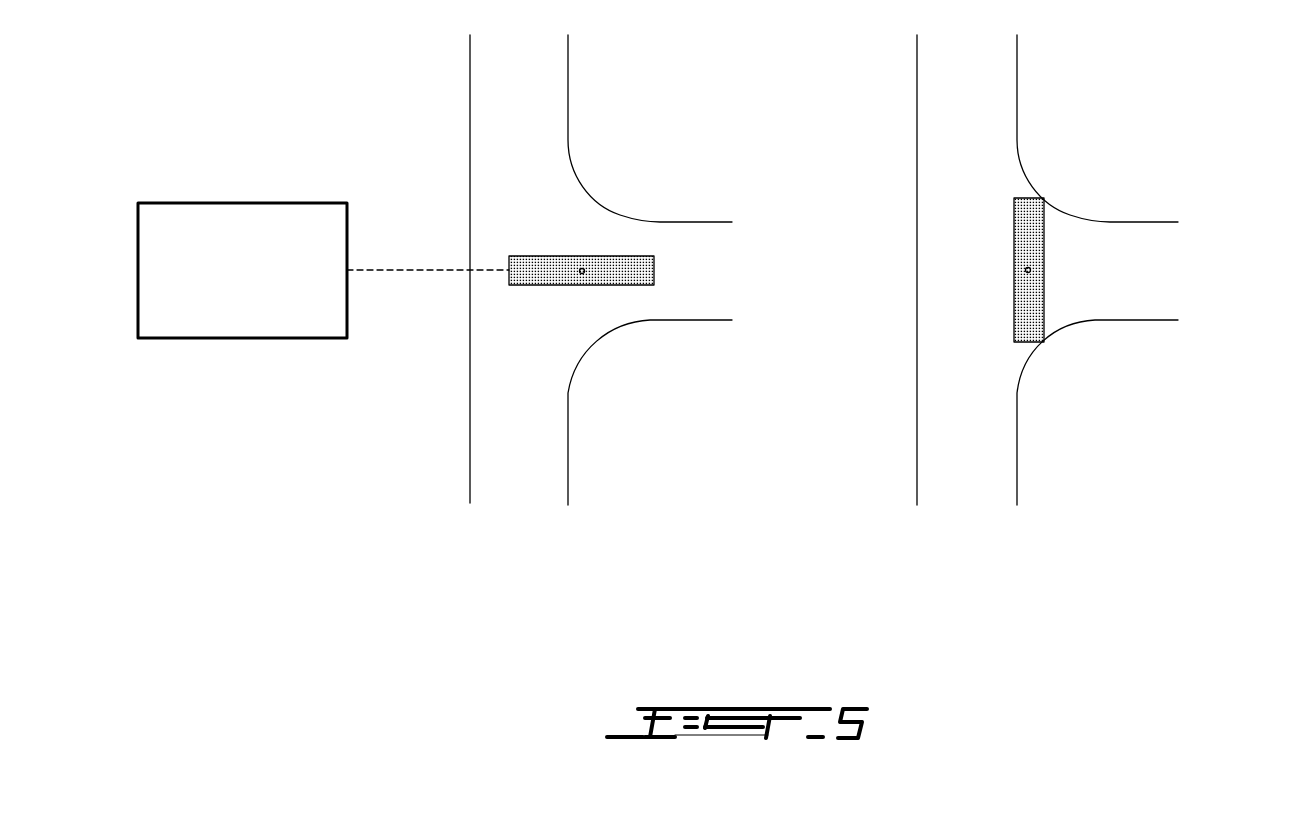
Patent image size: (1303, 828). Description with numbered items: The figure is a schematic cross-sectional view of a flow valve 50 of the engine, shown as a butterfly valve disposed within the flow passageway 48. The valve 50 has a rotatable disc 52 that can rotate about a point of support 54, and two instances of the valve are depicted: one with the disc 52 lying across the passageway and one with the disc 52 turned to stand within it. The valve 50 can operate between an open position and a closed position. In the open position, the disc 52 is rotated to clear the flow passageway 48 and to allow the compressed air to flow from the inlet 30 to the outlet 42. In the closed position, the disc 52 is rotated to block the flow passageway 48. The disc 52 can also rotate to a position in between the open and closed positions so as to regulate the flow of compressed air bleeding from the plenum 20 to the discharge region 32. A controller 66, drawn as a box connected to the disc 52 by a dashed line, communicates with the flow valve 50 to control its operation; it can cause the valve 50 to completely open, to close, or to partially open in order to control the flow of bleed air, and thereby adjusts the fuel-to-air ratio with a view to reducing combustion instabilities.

The plenum 20 is at (843, 607).
The inlet 30 is at (523, 498).
The discharge region 32 is at (1250, 313).
The outlet 42 is at (1170, 251).
The flow passageway 48 is at (698, 283).
The flow valve 50 is at (1000, 198).
The rotatable disc 52 is at (523, 285).
The point of support 54 is at (582, 274).
The controller 66 is at (162, 270).